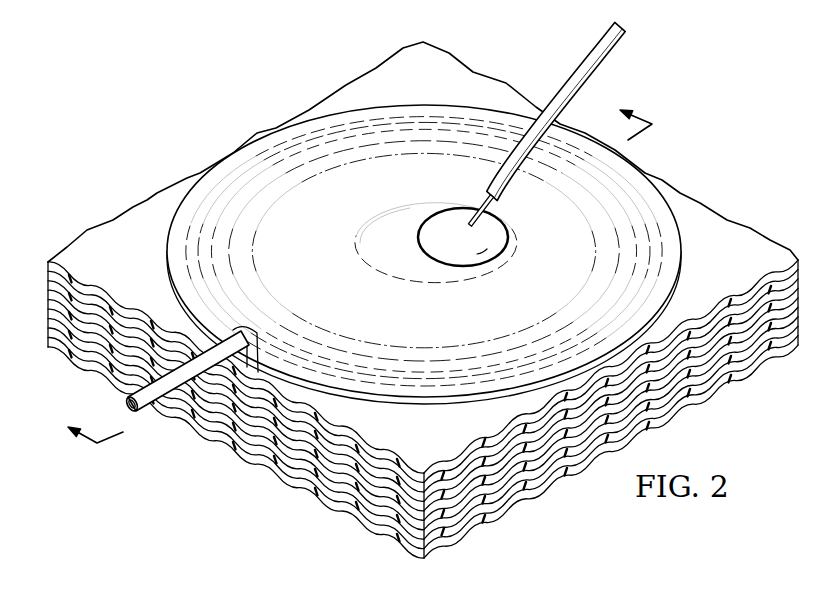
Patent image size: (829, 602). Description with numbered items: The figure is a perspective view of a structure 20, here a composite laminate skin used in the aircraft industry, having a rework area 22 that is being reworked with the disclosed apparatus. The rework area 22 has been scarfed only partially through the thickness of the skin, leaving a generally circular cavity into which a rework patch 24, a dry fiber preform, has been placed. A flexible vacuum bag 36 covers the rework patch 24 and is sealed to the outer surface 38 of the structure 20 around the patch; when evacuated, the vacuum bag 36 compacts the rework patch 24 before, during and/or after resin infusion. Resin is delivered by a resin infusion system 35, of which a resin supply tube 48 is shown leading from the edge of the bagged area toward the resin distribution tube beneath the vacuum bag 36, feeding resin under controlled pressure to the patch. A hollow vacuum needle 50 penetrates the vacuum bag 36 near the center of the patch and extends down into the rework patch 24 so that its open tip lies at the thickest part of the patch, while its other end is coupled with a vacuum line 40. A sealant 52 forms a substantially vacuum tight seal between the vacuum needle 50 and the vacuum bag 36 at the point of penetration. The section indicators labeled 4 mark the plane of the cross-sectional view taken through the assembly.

The structure 20 is at (423, 295).
The rework area 22 is at (399, 218).
The rework patch 24 is at (456, 160).
The resin infusion system 35 is at (168, 425).
The vacuum bag 36 is at (168, 262).
The surface 38 is at (376, 88).
The vacuum line 40 is at (527, 124).
The resin supply tube 48 is at (163, 400).
The vacuum needle 50 is at (475, 203).
The sealant 52 is at (510, 240).
The section line 4 is at (352, 267).